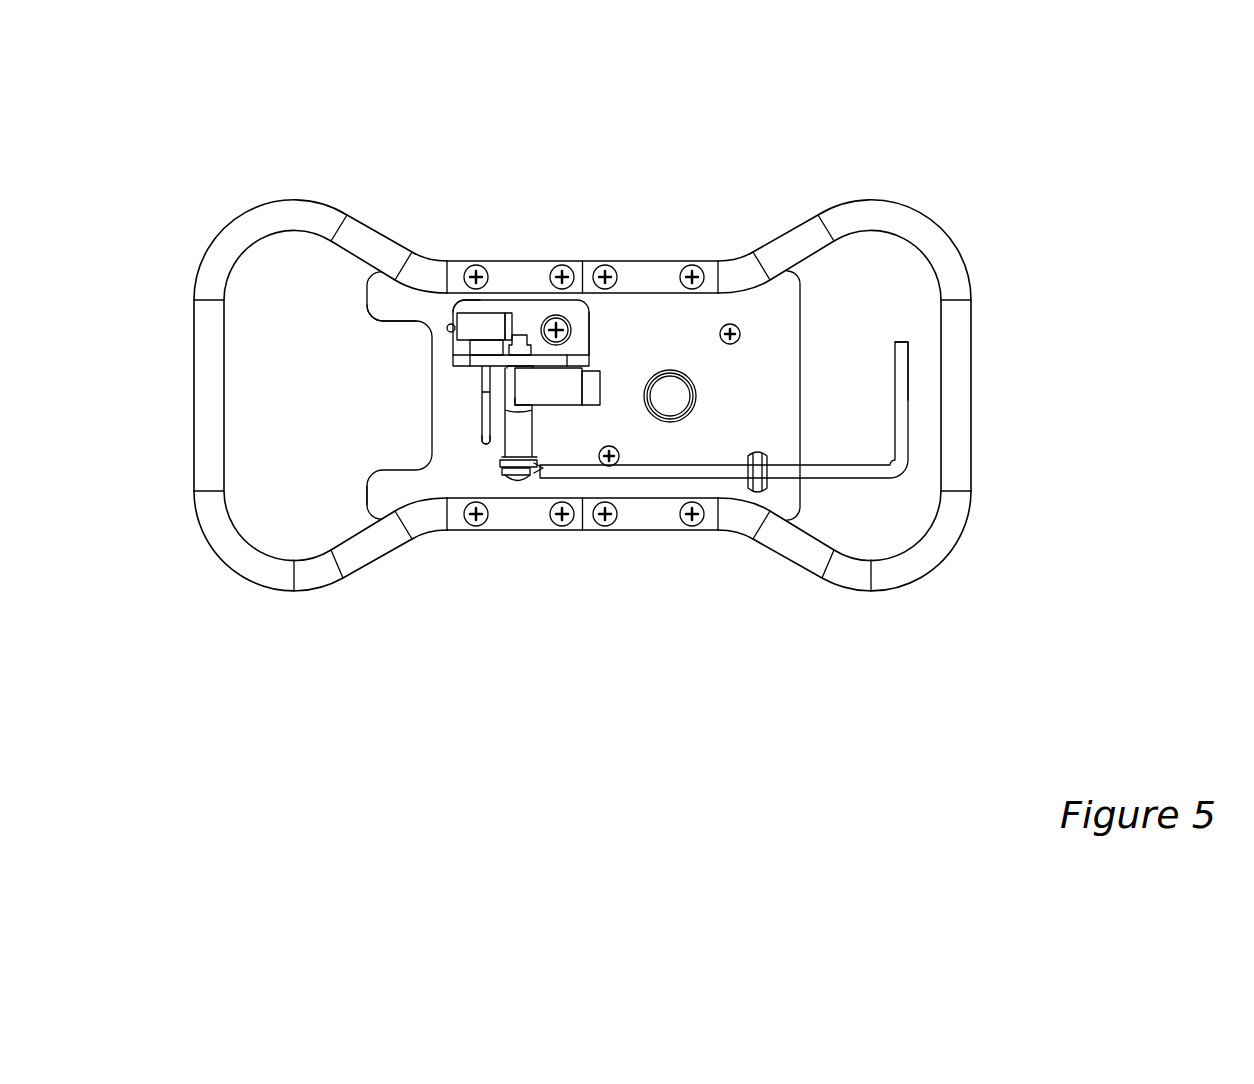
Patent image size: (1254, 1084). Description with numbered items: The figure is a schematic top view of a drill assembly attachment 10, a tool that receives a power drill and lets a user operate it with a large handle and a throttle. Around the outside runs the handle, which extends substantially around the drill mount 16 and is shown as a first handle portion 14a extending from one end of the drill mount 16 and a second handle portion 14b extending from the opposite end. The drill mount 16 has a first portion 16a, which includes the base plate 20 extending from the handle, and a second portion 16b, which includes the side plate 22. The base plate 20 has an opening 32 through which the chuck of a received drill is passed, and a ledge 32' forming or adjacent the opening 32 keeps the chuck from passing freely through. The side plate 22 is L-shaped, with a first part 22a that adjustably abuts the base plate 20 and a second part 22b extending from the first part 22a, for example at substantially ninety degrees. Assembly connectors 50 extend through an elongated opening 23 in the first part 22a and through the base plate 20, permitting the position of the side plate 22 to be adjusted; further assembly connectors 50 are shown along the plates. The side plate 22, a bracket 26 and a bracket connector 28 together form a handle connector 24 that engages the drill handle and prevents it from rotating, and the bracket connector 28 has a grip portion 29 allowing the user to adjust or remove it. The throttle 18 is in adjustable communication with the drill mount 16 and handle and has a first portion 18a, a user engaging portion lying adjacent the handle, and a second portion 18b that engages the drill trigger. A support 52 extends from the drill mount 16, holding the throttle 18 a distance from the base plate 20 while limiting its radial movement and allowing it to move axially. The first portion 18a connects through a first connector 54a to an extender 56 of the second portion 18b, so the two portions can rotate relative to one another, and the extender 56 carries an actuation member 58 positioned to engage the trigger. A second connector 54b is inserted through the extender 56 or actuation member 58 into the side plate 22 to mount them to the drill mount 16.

The drill assembly attachment 10 is at (238, 100).
The first handle portion 14a is at (928, 222).
The second handle portion 14b is at (237, 222).
The drill mount 16 is at (370, 344).
The first portion of the drill mount 16a is at (408, 438).
The second portion of the drill mount 16b is at (616, 348).
The throttle 18 is at (846, 472).
The first portion of the throttle 18a is at (872, 392).
The second portion of the throttle 18b is at (580, 420).
The base plate 20 is at (790, 300).
The side plate 22 is at (586, 320).
The first part of the side plate 22a is at (457, 309).
The second part of the side plate 22b is at (458, 358).
The opening in the first part 23 is at (480, 312).
The handle connector 24 is at (446, 406).
The bracket 26 is at (482, 443).
The bracket connector 28 is at (510, 312).
The grip portion 29 is at (445, 326).
The opening 32 is at (697, 391).
The ledge 32' is at (701, 399).
The assembly connectors 50 is at (476, 265).
The support 52 is at (757, 450).
The first connector 54a is at (516, 480).
The second connector 54b is at (509, 416).
The extender 56 is at (524, 440).
The actuation member 58 is at (598, 378).